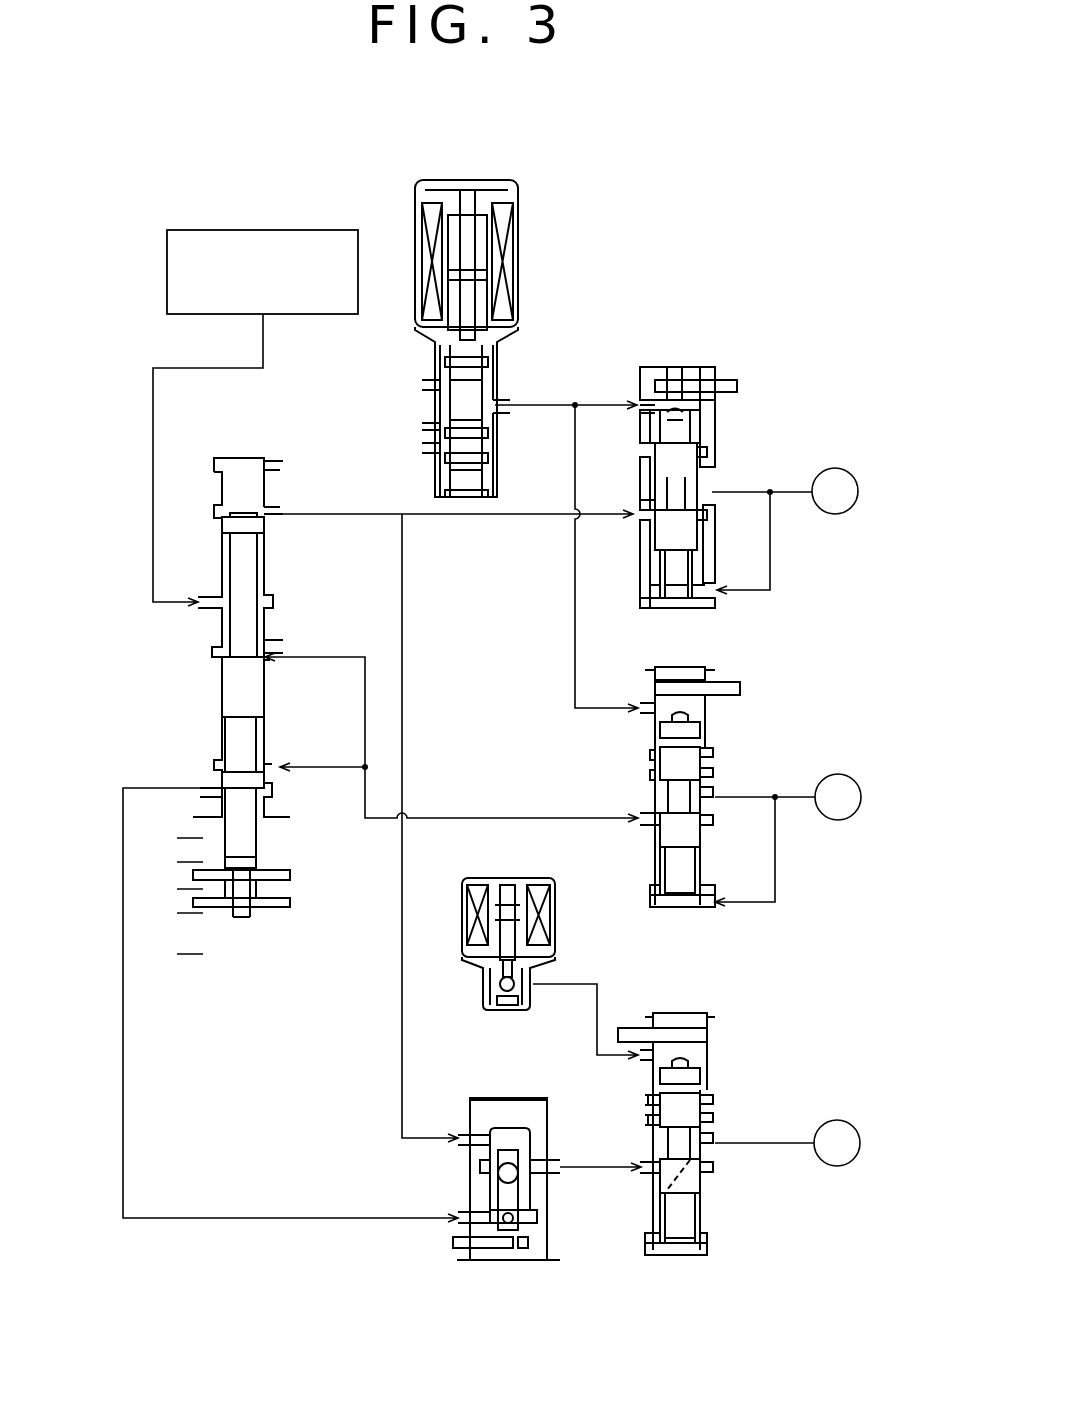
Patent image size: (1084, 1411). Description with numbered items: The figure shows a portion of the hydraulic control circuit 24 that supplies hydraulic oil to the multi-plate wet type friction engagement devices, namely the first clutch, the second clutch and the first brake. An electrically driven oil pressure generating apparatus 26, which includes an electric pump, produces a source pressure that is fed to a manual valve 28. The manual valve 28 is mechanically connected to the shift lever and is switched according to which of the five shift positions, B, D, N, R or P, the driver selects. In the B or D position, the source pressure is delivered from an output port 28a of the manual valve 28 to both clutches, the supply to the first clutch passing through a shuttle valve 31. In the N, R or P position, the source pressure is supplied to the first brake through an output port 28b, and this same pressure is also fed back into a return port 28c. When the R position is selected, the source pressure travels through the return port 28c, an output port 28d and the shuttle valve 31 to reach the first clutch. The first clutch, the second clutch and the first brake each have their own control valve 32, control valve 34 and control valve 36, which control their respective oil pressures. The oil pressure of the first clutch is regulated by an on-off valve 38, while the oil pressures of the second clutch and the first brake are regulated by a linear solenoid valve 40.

The hydraulic control circuit 24 is at (731, 220).
The oil pressure generating apparatus 26 is at (272, 230).
The manual valve 28 is at (278, 442).
The output port 28a is at (272, 515).
The output port 28b is at (270, 653).
The return port 28c is at (267, 762).
The output port 28d is at (208, 787).
The shuttle valve 31 is at (494, 1085).
The control valve 32 is at (743, 1034).
The control valve 34 is at (749, 350).
The control valve 36 is at (744, 654).
The on-off valve 38 is at (501, 865).
The linear solenoid valve 40 is at (563, 225).